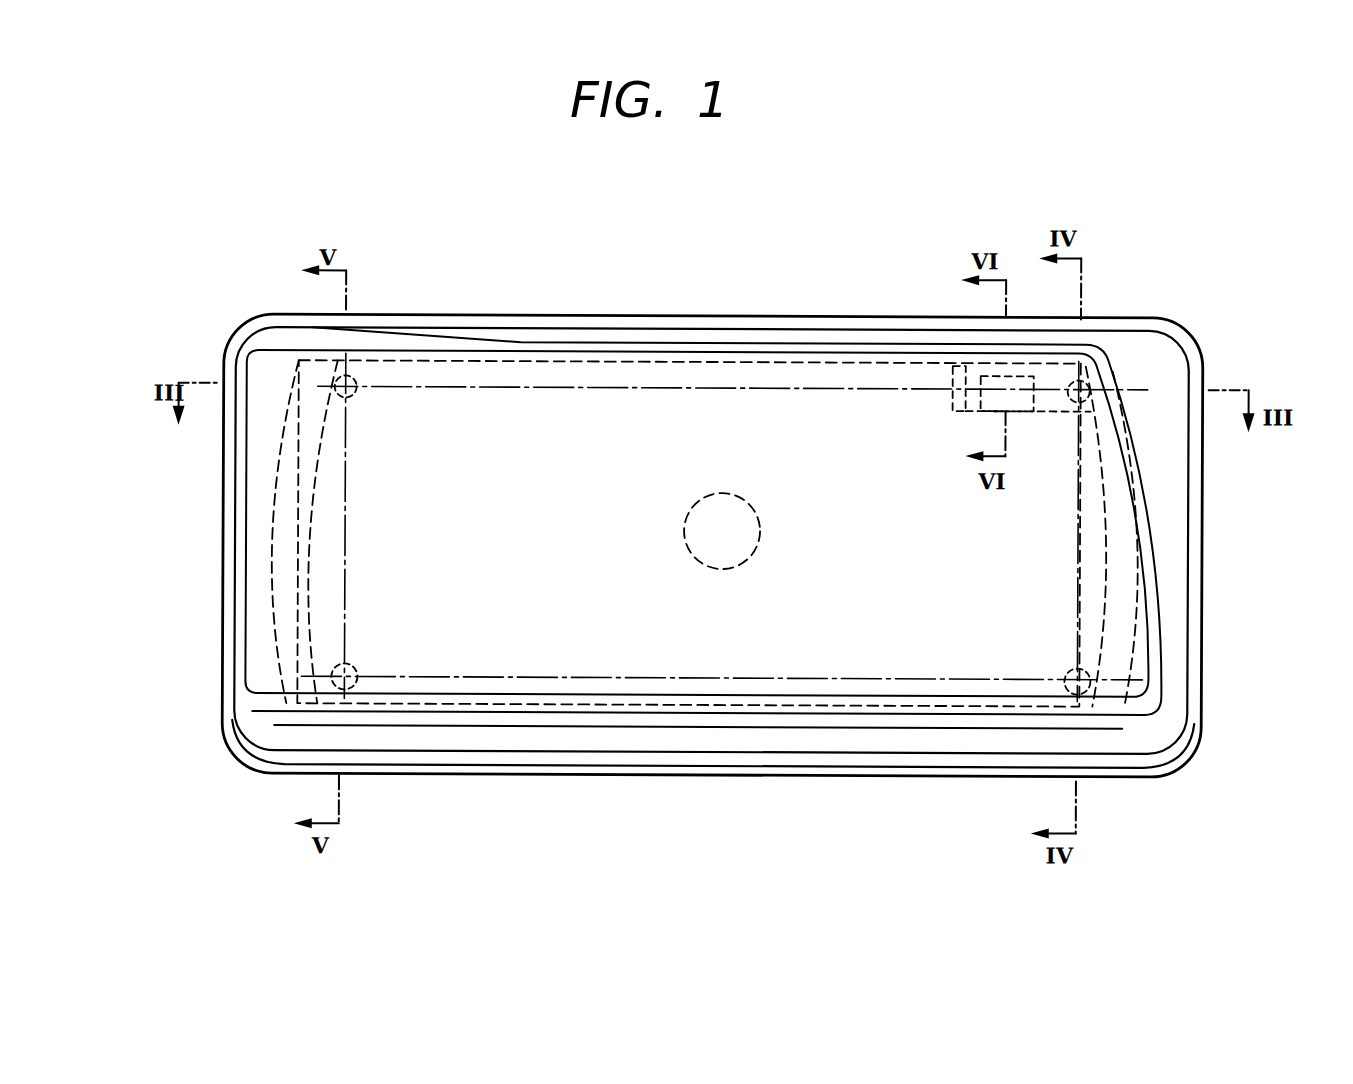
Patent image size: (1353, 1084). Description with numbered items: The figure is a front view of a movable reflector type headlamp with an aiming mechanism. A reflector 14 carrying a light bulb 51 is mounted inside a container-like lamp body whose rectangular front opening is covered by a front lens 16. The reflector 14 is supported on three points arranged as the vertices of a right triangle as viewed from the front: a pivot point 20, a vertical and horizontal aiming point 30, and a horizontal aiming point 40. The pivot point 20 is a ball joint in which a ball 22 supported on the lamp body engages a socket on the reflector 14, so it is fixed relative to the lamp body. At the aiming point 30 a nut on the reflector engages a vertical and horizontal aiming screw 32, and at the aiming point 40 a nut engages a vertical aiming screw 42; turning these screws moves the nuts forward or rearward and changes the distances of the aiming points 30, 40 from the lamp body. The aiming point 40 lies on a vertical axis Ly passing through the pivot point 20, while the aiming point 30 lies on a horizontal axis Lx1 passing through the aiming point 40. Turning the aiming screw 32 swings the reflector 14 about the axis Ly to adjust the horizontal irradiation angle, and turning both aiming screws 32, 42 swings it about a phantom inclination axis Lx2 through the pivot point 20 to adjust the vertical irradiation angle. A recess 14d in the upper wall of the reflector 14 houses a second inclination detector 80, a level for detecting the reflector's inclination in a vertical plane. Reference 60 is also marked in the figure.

The reflector 14 is at (828, 372).
The recess 14d is at (960, 365).
The front lens 16 is at (597, 660).
The pivot point 20 is at (1136, 338).
The ball 22 is at (1098, 376).
The vertical and horizontal aiming point 30 is at (412, 749).
The vertical and horizontal aiming screw 32 is at (360, 695).
The horizontal aiming point 40 is at (1190, 678).
The vertical aiming screw 42 is at (1100, 664).
The light bulb 51 is at (760, 530).
The boss 60 is at (358, 376).
The second inclination detector 80 is at (995, 362).
The horizontal axis Lx1 is at (810, 678).
The phantom inclination axis Lx2 is at (652, 385).
The vertical axis Ly is at (1078, 588).